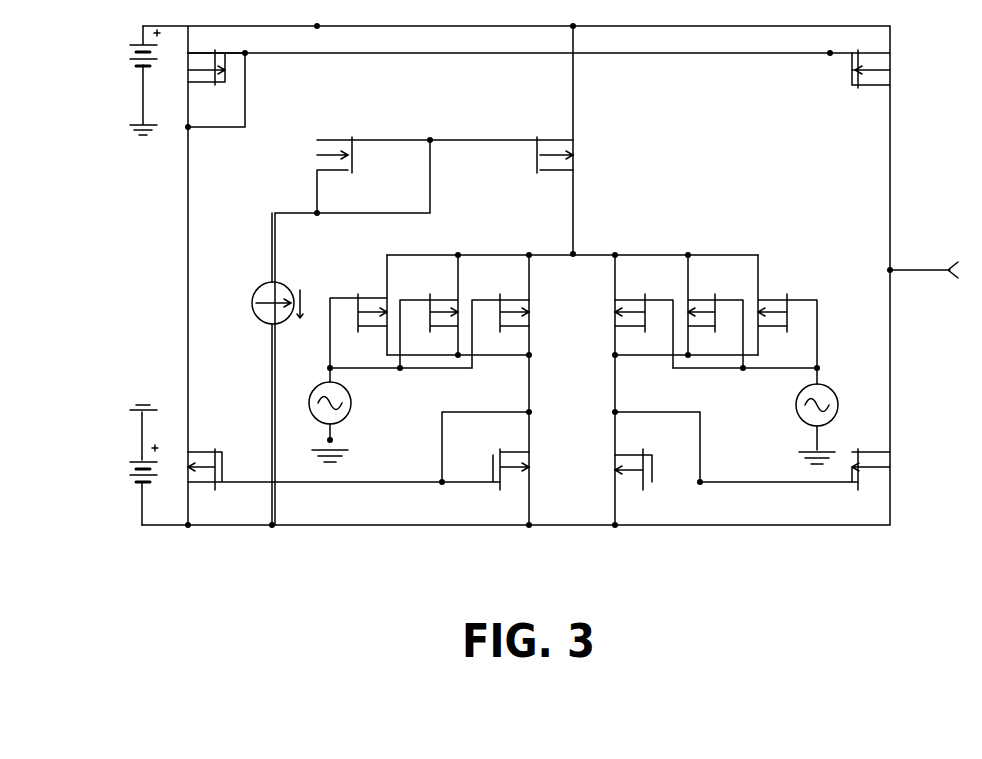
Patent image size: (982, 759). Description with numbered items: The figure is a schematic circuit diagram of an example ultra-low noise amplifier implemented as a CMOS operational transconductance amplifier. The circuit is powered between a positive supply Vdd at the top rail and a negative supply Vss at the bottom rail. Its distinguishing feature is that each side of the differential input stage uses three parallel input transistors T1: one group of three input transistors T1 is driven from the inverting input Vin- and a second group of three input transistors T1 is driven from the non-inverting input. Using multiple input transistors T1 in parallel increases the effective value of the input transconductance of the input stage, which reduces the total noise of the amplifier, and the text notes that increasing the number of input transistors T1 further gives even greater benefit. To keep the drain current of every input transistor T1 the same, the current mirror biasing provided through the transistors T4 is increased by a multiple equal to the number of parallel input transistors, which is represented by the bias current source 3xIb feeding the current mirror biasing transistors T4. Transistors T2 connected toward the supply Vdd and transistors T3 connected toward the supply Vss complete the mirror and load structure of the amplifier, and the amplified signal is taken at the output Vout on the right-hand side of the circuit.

The input transistor T1 is at (573, 311).
The T2 transistor T2 is at (539, 88).
The T3 transistor T3 is at (539, 451).
The T4 current mirror biasing transistor T4 is at (424, 331).
The positive supply Vdd is at (124, 80).
The negative supply Vss is at (121, 465).
The bias current source 3xIb is at (251, 303).
The inverting input Vin- is at (353, 415).
The output Vout is at (925, 255).